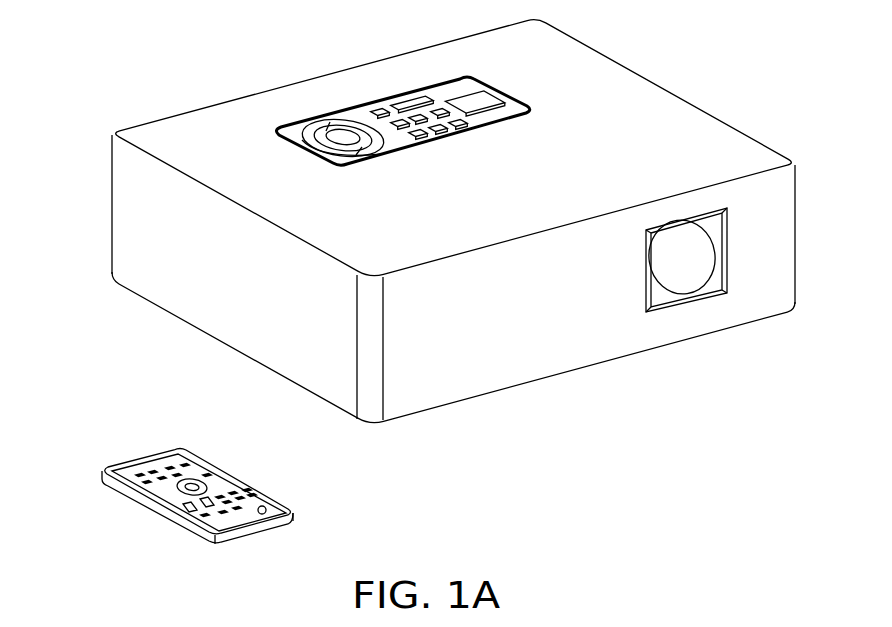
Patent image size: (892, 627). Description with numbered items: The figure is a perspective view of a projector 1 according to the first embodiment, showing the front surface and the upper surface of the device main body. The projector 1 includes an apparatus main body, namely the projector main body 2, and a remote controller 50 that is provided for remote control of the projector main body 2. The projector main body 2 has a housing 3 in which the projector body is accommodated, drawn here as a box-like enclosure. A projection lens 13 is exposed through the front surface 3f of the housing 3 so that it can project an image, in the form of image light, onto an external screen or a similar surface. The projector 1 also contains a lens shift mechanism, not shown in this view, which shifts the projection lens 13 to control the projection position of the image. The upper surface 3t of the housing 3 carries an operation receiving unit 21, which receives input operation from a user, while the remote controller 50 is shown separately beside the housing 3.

The projector 1 is at (420, 503).
The projector main body 2 is at (424, 442).
The housing 3 is at (613, 80).
The upper surface 3t is at (670, 115).
The front surface 3f is at (558, 352).
The projection lens 13 is at (700, 256).
The operation receiving unit 21 is at (358, 113).
The remote controller 50 is at (293, 516).